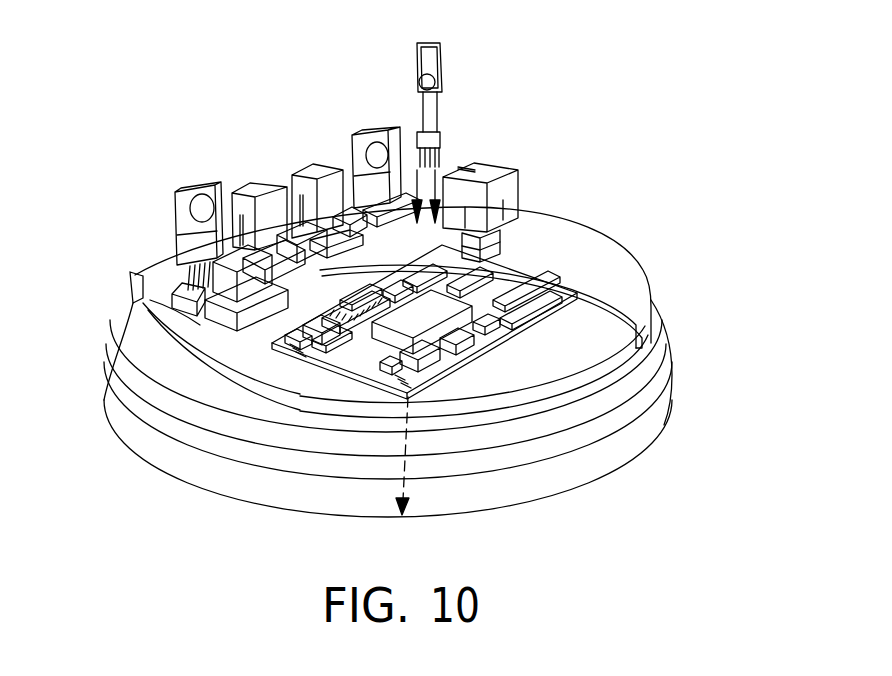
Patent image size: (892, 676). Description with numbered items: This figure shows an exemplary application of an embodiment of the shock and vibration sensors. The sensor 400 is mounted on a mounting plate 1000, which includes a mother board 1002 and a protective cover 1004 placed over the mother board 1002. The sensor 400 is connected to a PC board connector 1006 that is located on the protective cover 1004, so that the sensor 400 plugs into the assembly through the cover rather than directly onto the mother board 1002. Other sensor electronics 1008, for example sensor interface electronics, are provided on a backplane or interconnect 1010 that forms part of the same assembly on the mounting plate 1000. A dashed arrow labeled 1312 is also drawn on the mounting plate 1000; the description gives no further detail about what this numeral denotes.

The sensor 400 is at (521, 178).
The mounting plate 1000 is at (662, 402).
The mother board 1002 is at (515, 325).
The protective cover 1004 is at (576, 266).
The PC board connector 1006 is at (500, 248).
The sensor electronics 1008 is at (178, 218).
The backplane or interconnect 1010 is at (210, 333).
The insertion direction 1312 is at (592, 486).